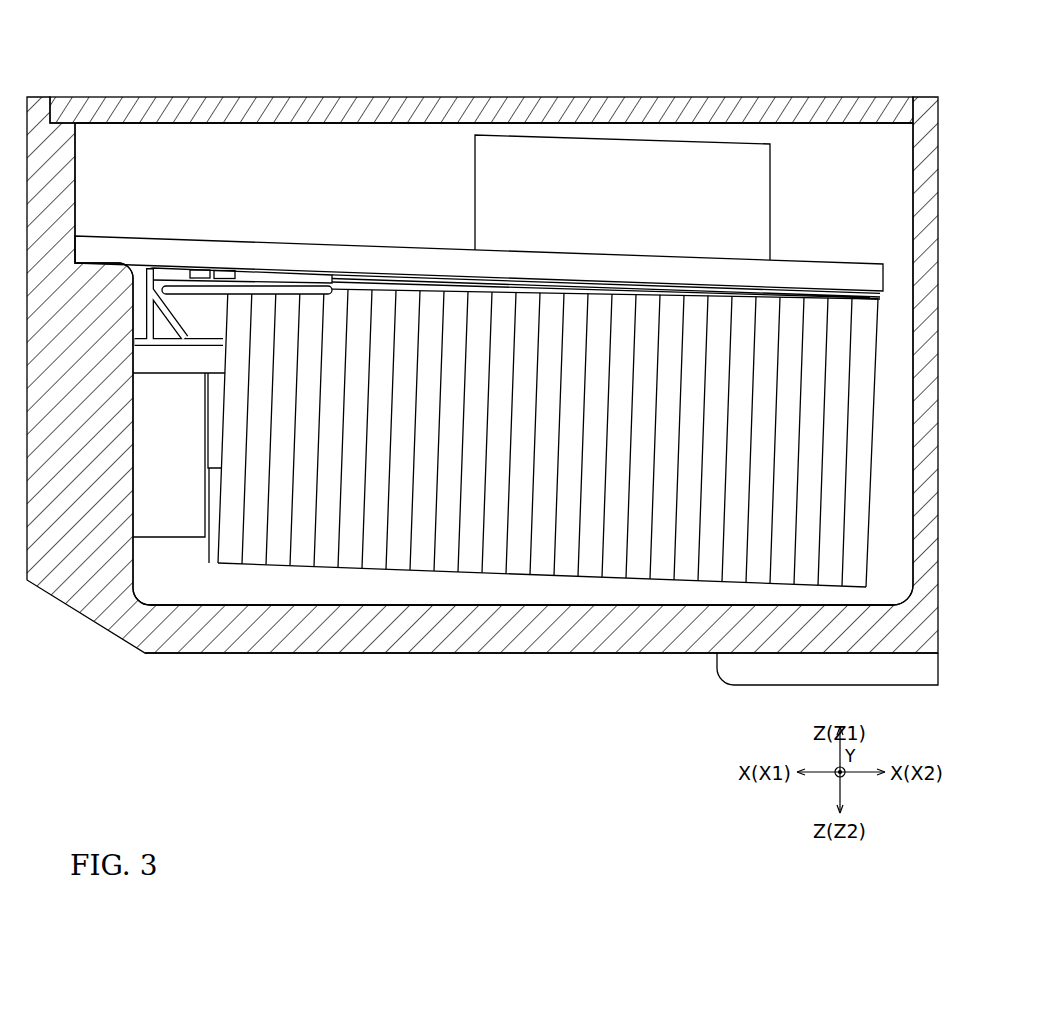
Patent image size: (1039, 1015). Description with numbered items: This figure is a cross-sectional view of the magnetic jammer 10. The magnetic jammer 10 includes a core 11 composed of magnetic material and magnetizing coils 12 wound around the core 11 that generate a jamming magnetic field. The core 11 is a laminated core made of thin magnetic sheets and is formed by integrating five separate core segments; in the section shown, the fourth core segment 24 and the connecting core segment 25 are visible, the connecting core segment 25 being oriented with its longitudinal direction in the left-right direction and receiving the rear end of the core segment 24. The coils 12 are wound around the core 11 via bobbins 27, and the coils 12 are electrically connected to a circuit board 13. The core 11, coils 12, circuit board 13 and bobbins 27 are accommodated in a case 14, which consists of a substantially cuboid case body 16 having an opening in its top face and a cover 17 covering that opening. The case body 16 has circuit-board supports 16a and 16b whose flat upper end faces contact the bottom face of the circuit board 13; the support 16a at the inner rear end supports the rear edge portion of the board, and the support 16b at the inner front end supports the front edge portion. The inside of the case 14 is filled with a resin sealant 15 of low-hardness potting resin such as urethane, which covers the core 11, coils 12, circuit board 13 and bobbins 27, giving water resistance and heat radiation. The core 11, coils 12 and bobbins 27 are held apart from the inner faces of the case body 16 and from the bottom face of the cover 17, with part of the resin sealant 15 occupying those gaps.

The magnetic jammer 10 is at (884, 73).
The core 11 is at (175, 540).
The magnetizing coils 12 is at (545, 578).
The circuit board 13 is at (304, 240).
The case 14 is at (401, 655).
The resin sealant 15 is at (145, 122).
The case body 16 is at (401, 655).
The circuit-board support 16a is at (100, 262).
The circuit-board support 16b is at (905, 290).
The cover 17 is at (370, 97).
The core segment 24 is at (212, 475).
The connecting core segment 25 is at (175, 540).
The bobbins 27 is at (228, 565).